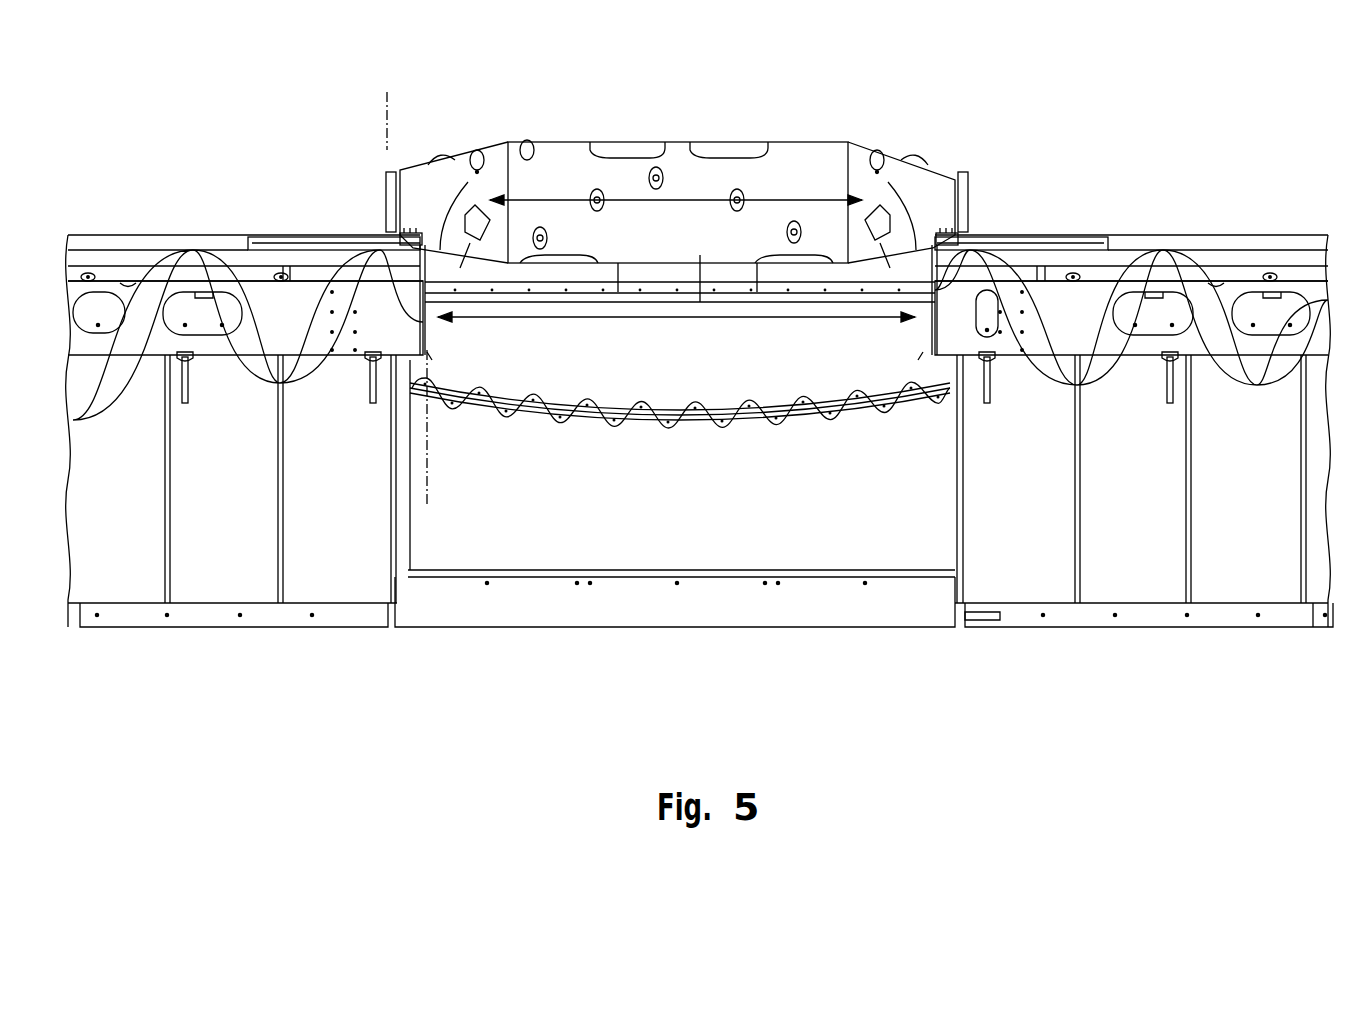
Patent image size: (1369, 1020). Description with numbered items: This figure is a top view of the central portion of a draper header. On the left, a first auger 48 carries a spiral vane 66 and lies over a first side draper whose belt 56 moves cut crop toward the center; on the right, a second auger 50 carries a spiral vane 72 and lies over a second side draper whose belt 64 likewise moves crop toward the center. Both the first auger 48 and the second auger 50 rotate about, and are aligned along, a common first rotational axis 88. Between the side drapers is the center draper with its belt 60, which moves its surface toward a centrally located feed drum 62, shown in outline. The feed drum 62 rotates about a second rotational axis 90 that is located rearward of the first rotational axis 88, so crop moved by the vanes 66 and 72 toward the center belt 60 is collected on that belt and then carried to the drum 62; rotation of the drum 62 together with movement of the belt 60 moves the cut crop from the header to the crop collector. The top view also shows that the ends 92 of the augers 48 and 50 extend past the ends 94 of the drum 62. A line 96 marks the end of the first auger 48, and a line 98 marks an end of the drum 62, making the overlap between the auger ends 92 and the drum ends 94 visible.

The first auger 48 is at (305, 305).
The second auger 50 is at (1097, 302).
The belt 56 is at (222, 580).
The belt 60 is at (740, 515).
The feed drum 62 is at (786, 160).
The belt 64 is at (1148, 583).
The vane 66 is at (190, 262).
The vane 72 is at (1167, 260).
The first rotational axis 88 is at (677, 318).
The second rotational axis 90 is at (632, 200).
The ends 92 is at (430, 352).
The ends 94 is at (408, 165).
The line 96 is at (432, 482).
The line 98 is at (383, 142).